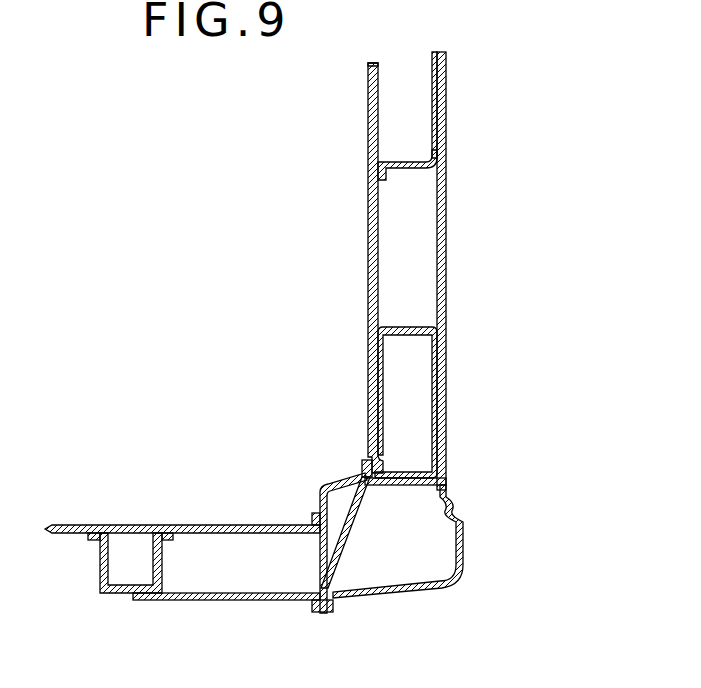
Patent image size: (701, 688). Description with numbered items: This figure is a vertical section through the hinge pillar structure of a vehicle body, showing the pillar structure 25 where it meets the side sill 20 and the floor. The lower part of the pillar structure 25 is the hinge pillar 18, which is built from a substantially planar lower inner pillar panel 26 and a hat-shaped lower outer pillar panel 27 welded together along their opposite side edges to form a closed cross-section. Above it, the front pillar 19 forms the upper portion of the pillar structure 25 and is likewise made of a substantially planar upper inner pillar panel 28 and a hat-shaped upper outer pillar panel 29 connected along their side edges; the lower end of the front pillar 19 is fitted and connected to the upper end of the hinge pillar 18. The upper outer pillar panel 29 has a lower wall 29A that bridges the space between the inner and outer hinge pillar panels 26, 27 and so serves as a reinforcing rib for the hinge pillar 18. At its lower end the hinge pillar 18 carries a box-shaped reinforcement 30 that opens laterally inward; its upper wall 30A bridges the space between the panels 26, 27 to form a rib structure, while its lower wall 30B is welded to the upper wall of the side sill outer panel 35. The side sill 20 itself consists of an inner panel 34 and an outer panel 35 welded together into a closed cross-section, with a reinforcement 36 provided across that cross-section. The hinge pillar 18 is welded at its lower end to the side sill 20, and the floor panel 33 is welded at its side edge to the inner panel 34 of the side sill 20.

The hinge pillar 18 is at (421, 245).
The front pillar 19 is at (401, 92).
The side sill 20 is at (438, 563).
The pillar structure 25 is at (483, 271).
The lower inner pillar panel 26 is at (370, 270).
The lower outer pillar panel 27 is at (447, 223).
The upper inner pillar panel 28 is at (380, 82).
The upper outer pillar panel 29 is at (430, 82).
The lower wall 29A is at (408, 170).
The reinforcement 30 is at (433, 374).
The upper wall 30A is at (406, 327).
The lower wall 30B is at (405, 470).
The floor panel 33 is at (212, 525).
The inner panel 34 is at (330, 490).
The outer panel 35 is at (441, 590).
The reinforcement 36 is at (355, 527).